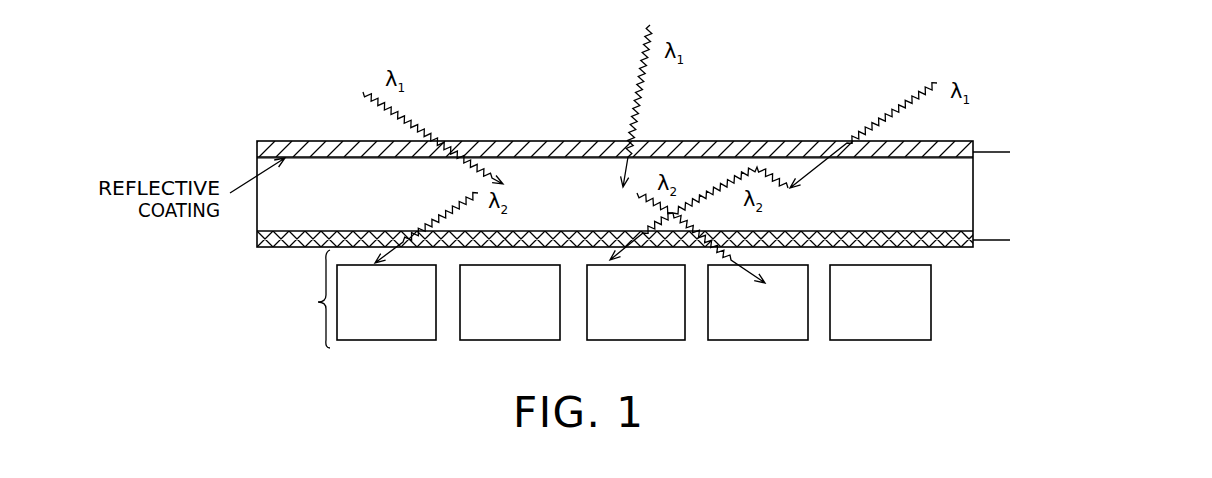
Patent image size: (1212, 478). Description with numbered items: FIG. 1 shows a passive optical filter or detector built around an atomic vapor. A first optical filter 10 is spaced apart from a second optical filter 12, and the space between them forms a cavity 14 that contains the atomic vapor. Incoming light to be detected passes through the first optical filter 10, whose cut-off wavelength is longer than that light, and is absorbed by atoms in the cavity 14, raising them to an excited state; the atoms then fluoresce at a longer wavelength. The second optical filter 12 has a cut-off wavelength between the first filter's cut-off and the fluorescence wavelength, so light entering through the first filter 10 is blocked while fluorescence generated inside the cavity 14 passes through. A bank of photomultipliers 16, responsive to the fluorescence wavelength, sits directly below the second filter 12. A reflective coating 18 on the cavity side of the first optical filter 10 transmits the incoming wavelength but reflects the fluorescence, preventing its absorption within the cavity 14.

The first optical filter 10 is at (727, 141).
The second optical filter 12 is at (287, 250).
The cavity 14 is at (272, 213).
The bank of photomultipliers 16 is at (318, 302).
The reflective coating 18 is at (257, 163).